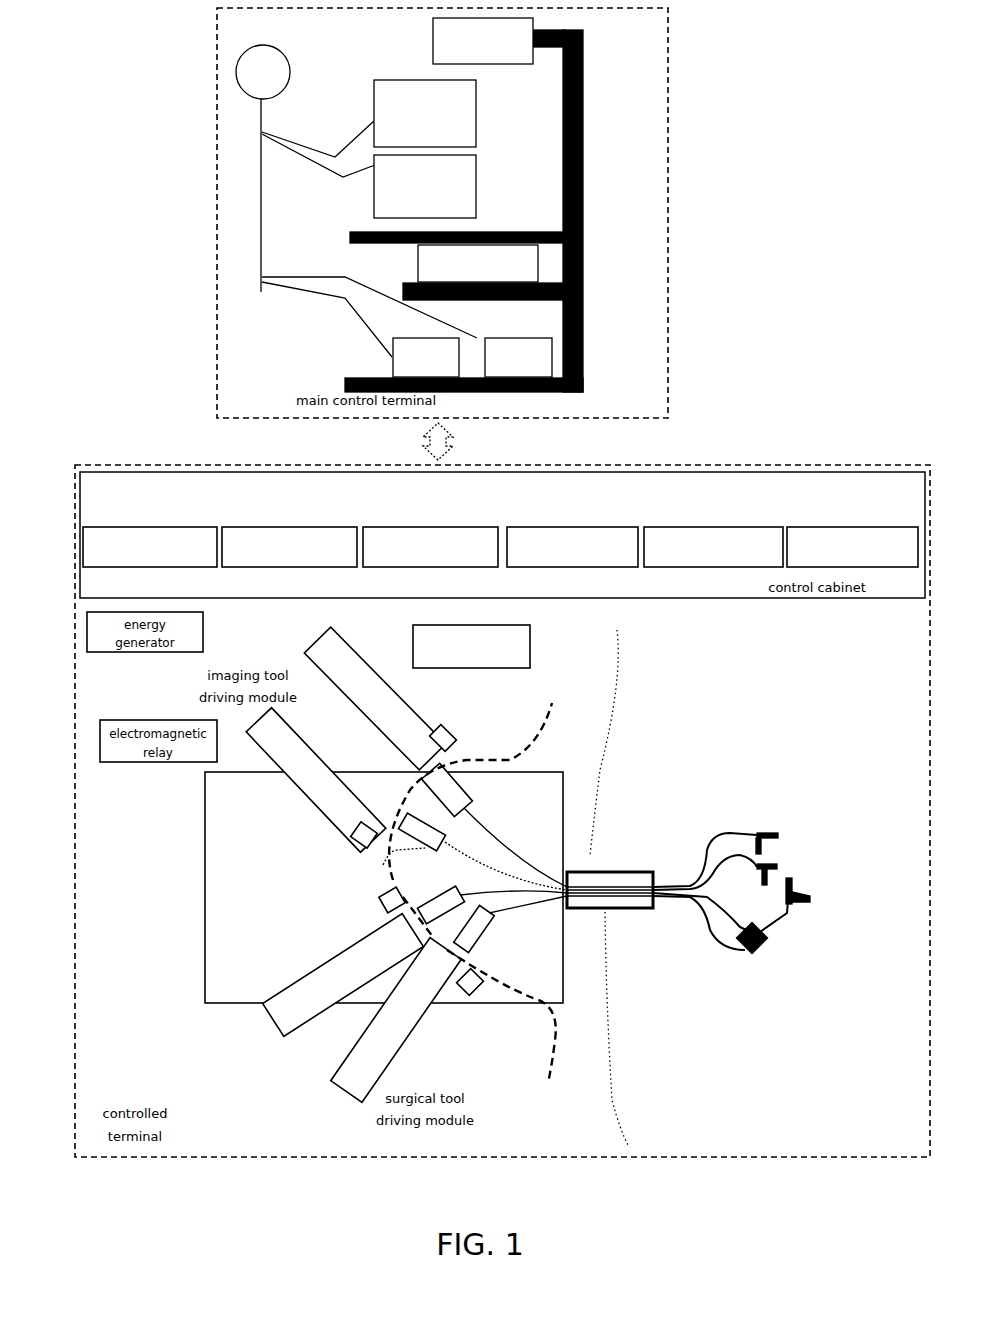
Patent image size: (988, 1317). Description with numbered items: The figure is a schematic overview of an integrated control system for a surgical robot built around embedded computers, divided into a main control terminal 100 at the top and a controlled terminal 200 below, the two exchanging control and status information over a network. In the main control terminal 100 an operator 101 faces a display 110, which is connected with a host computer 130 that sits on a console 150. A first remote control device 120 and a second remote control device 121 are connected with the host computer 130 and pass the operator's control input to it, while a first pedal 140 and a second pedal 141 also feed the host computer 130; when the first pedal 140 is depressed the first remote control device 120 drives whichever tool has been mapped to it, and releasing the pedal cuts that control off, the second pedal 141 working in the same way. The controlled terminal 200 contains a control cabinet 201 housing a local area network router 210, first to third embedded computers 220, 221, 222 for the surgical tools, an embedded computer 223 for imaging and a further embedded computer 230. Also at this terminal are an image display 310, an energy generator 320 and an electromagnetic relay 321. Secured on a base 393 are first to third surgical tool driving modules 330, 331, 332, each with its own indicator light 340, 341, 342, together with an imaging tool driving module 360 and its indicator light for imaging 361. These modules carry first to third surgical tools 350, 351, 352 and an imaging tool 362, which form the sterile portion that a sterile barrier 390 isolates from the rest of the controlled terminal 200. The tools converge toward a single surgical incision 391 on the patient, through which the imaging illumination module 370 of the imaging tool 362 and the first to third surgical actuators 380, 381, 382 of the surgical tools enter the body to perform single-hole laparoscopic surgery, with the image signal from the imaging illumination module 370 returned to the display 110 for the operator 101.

The main control terminal 100 is at (215, 318).
The operator 101 is at (300, 290).
The display 110 is at (433, 38).
The first remote control device 120 is at (476, 108).
The second remote control device 121 is at (476, 172).
The host computer 130 is at (418, 263).
The first pedal 140 is at (430, 338).
The second pedal 141 is at (520, 338).
The console 150 is at (583, 178).
The controlled terminal 200 is at (75, 985).
The control cabinet 201 is at (700, 598).
The local area network router 210 is at (170, 527).
The first embedded computer for surgical tools 220 is at (335, 527).
The second embedded computer for surgical tools 221 is at (470, 527).
The third embedded computer for surgical tools 222 is at (610, 527).
The embedded computer for imaging 223 is at (745, 527).
The embedded computer 230 is at (880, 527).
The image display 310 is at (530, 660).
The energy generator 320 is at (146, 653).
The electromagnetic relay 321 is at (158, 763).
The first surgical tool driving module 330 is at (390, 702).
The second surgical tool driving module 331 is at (365, 940).
The third surgical tool driving module 332 is at (420, 1025).
The first indicator light 340 is at (460, 738).
The second indicator light 341 is at (378, 905).
The third indicator light 342 is at (478, 988).
The first surgical tool 350 is at (485, 792).
The second surgical tool 351 is at (440, 892).
The third surgical tool 352 is at (483, 935).
The imaging tool driving module 360 is at (330, 795).
The indicator light for imaging 361 is at (352, 840).
The imaging tool 362 is at (383, 865).
The imaging illumination module 370 is at (757, 960).
The first surgical actuator 380 is at (795, 880).
The second surgical actuator 381 is at (785, 862).
The third surgical actuator 382 is at (768, 832).
The sterile barrier 390 is at (553, 1083).
The single surgical incision 391 is at (603, 862).
The base 393 is at (205, 995).